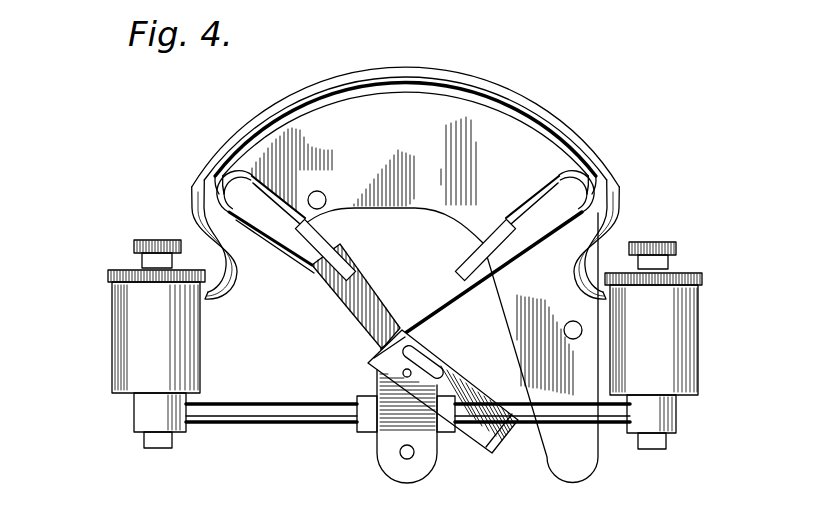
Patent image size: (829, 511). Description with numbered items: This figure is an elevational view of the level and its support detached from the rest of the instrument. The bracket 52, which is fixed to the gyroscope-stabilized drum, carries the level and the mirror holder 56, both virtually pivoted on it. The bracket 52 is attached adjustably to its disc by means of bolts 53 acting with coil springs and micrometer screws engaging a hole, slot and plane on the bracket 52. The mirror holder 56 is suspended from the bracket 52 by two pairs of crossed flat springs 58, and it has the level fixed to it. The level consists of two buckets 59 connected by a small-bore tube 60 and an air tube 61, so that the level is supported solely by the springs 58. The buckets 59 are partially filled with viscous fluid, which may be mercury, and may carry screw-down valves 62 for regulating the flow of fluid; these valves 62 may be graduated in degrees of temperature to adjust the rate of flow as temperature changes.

The bracket 52 is at (478, 134).
The bolts 53 is at (311, 194).
The mirror holder 56 is at (477, 418).
The crossed flat springs 58 is at (358, 312).
The buckets 59 is at (120, 328).
The small-bore tube 60 is at (292, 417).
The air tube 61 is at (557, 127).
The screw-down valves 62 is at (133, 247).